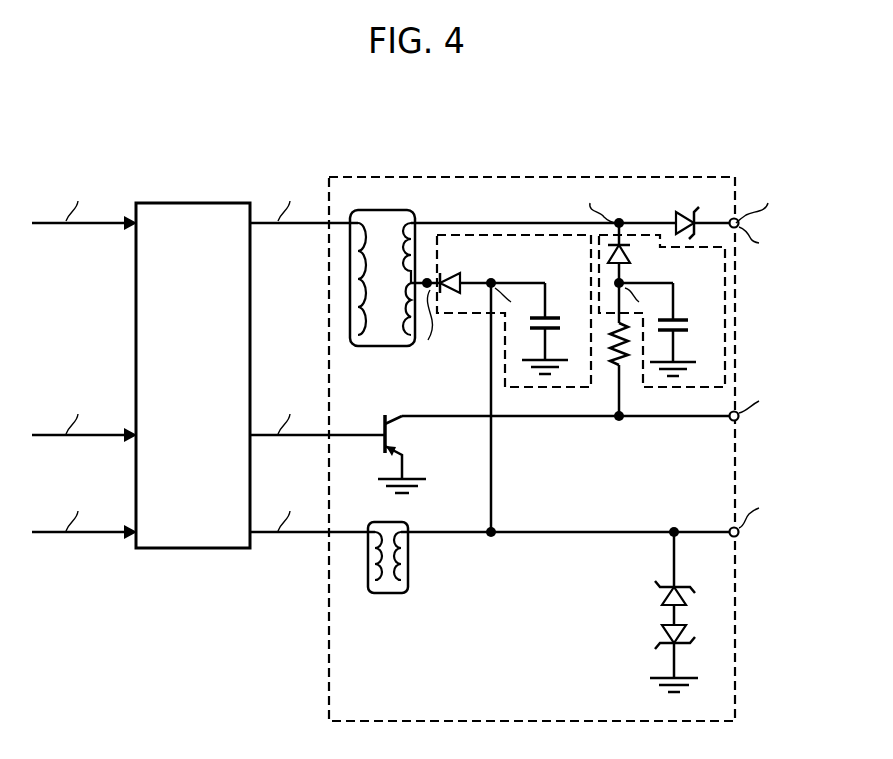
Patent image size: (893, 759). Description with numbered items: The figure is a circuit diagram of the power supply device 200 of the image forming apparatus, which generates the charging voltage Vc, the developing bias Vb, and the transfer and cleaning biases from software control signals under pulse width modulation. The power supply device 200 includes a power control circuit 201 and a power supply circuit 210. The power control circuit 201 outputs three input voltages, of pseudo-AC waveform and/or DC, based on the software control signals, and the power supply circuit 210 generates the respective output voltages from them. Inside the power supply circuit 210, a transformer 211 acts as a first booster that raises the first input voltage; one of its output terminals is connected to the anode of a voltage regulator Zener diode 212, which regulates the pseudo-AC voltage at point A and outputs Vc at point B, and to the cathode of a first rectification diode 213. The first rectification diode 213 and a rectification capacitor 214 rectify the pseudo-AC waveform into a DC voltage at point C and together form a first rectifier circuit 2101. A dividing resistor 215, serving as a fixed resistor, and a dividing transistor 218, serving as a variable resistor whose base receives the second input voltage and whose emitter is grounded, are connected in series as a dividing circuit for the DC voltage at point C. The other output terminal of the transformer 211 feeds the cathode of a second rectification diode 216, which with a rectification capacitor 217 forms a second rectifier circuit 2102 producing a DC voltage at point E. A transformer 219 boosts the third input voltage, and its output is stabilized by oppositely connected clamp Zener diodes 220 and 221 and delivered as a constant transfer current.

The power supply device 200 is at (174, 128).
The power control circuit 201 is at (191, 203).
The power supply circuit 210 is at (691, 177).
The transformer 211 is at (370, 347).
The voltage regulator Zener diode 212 is at (680, 213).
The first rectification diode 213 is at (628, 254).
The rectification capacitor 214 is at (681, 317).
The dividing resistor 215 is at (617, 364).
The second rectification diode 216 is at (462, 275).
The rectification capacitor 217 is at (553, 318).
The dividing transistor 218 is at (385, 419).
The transformer 219 is at (386, 594).
The clamp Zener diode 220 is at (662, 596).
The clamp Zener diode 221 is at (662, 634).
The first rectifier circuit 2101 is at (727, 334).
The second rectifier circuit 2102 is at (503, 377).